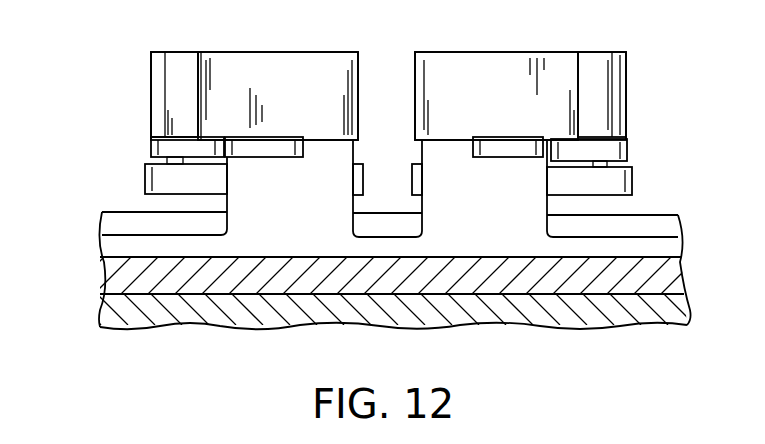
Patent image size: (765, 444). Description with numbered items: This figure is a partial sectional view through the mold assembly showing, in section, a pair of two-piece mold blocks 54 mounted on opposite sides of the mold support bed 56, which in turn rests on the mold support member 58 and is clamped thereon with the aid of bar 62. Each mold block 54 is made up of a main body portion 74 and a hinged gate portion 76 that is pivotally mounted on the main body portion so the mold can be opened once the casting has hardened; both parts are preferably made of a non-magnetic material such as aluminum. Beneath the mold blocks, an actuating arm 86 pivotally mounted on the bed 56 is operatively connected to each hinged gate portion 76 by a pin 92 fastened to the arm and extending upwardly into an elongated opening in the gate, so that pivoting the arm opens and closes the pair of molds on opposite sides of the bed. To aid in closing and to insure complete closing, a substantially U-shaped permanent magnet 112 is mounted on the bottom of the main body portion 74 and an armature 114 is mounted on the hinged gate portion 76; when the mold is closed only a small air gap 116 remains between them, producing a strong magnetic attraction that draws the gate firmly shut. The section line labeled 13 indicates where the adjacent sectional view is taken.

The section line 13- 13 is at (107, 159).
The mold block 54 is at (275, 48).
The mold support bed 56 is at (112, 228).
The mold support member 58 is at (112, 314).
The bar 62 is at (112, 275).
The main body portion 74 is at (237, 66).
The hinged gate portion 76 is at (172, 63).
The actuating arm 86 is at (152, 186).
The pin 92 is at (175, 165).
The permanent magnet 112 is at (287, 136).
The armature 114 is at (165, 148).
The air gap 116 is at (212, 136).